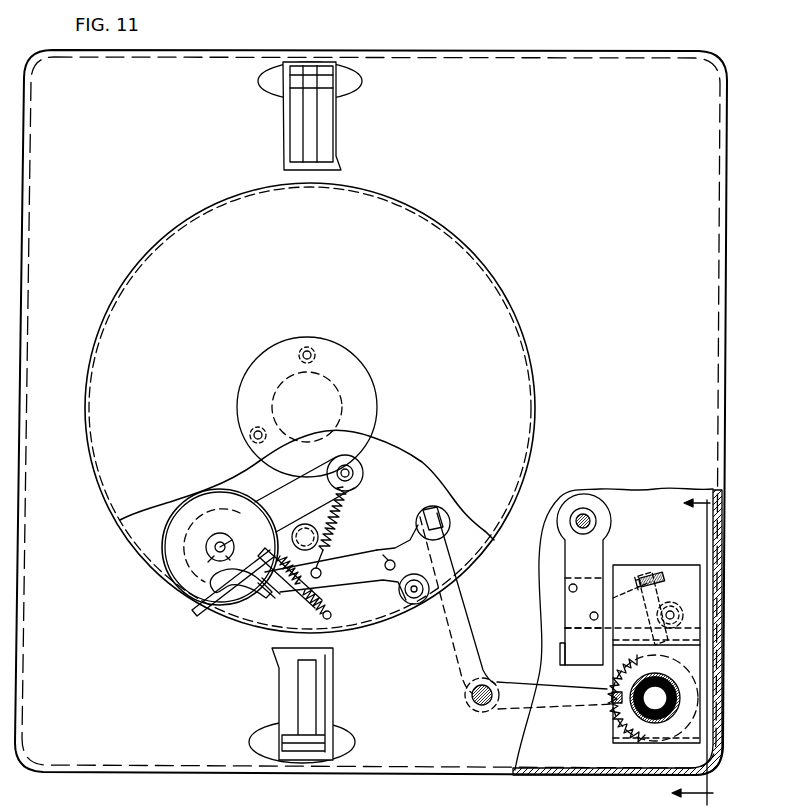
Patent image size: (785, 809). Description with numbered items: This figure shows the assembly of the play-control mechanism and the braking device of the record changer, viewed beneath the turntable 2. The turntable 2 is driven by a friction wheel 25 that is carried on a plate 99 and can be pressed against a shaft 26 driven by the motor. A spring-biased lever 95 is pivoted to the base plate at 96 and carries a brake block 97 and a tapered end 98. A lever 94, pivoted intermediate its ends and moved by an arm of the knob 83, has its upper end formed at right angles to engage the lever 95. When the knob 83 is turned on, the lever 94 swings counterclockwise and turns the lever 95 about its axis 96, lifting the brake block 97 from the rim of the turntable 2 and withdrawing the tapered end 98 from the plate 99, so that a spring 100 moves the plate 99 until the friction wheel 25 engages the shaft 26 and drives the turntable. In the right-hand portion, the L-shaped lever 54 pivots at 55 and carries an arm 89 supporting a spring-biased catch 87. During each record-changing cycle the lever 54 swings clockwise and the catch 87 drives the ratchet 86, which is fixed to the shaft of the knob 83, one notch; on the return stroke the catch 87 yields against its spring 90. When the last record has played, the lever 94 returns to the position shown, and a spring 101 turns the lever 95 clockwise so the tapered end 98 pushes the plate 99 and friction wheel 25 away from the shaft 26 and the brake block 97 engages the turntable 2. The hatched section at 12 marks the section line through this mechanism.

The turntable 2 is at (135, 550).
The section line 12- 12 is at (617, 647).
The friction wheel 25 is at (178, 528).
The shaft 26 is at (304, 523).
The L-shaped lever 54 is at (565, 553).
The pivot 55 is at (586, 515).
The knob 83 is at (680, 706).
The ratchet 86 is at (698, 661).
The spring-biased catch 87 is at (700, 625).
The arm 89 is at (612, 598).
The spring 90 is at (660, 575).
The lever 94 is at (548, 702).
The spring-biased lever 95 is at (412, 515).
The pivot 96 is at (390, 560).
The brake block 97 is at (410, 604).
The tapered end 98 is at (236, 603).
The plate 99 is at (217, 584).
The spring 100 is at (308, 600).
The spring 101 is at (347, 500).